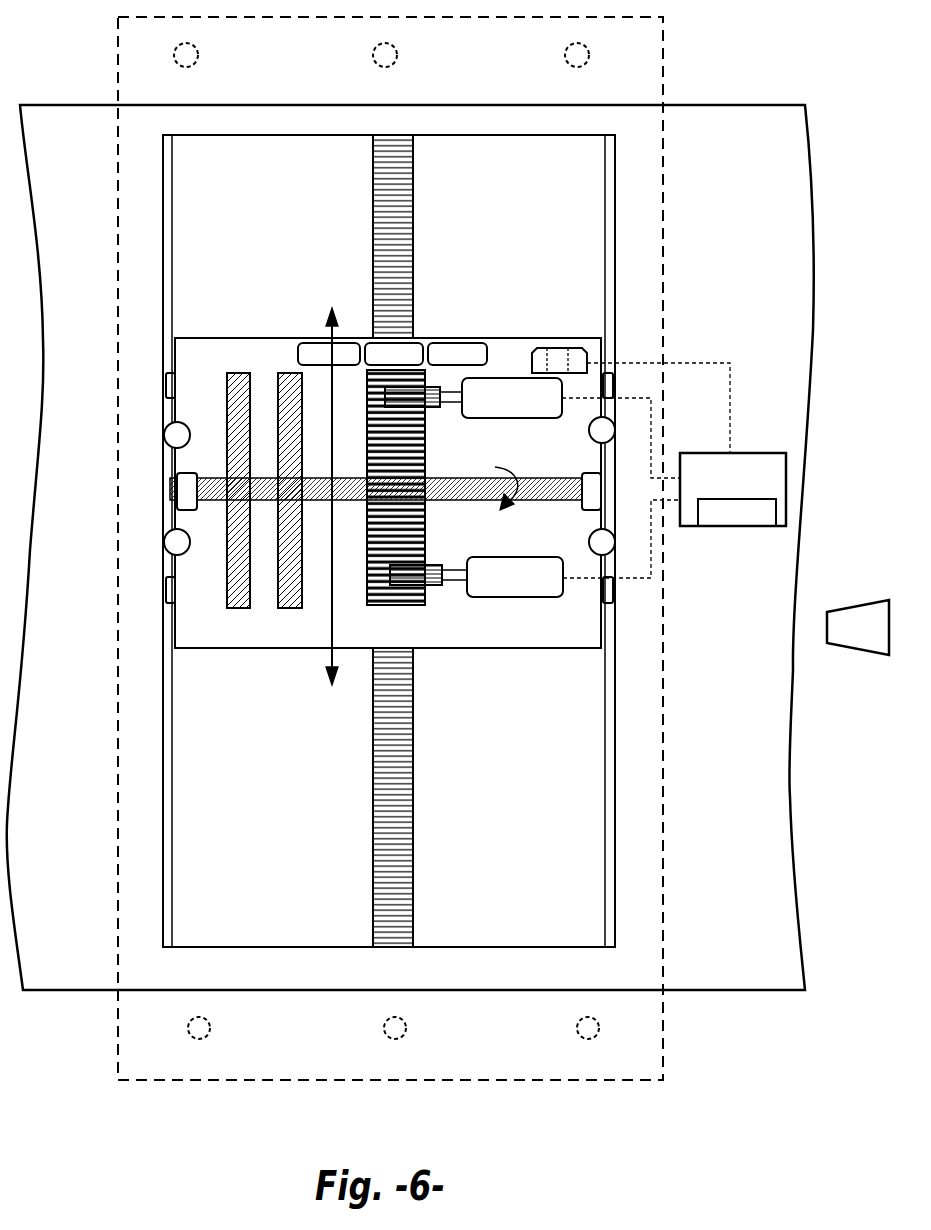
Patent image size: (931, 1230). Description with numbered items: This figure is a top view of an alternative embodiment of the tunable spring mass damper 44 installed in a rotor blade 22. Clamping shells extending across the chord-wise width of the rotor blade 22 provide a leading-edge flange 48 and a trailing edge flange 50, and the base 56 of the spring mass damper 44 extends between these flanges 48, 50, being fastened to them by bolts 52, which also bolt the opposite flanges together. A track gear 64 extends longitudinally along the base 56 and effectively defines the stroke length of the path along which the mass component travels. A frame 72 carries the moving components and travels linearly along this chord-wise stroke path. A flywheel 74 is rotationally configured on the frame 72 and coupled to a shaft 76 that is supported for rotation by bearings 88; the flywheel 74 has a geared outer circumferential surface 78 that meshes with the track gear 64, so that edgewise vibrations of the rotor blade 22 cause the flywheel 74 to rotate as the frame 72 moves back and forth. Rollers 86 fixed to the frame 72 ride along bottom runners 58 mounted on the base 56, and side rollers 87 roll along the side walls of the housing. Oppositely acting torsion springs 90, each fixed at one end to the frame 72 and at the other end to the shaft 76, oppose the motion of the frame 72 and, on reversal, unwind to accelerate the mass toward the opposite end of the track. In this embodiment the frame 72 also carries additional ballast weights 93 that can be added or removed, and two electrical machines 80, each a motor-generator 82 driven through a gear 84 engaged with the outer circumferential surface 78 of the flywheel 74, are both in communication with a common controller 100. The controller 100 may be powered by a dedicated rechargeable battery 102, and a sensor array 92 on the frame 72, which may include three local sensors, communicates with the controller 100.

The rotor blade 22 is at (55, 184).
The spring mass damper 44 is at (702, 264).
The leading-edge flange 48 is at (462, 74).
The trailing edge flange 50 is at (279, 1057).
The bolts 52 is at (198, 57).
The base 56 is at (242, 221).
The bottom runners 58 is at (172, 752).
The track gear 64 is at (413, 207).
The frame 72 is at (189, 636).
The flywheel 74 is at (425, 526).
The shaft 76 is at (553, 490).
The geared outer circumferential surface 78 is at (392, 598).
The electrical machine 80 is at (477, 536).
The motor-generator 82 is at (492, 405).
The gear 84 is at (424, 397).
The rollers 86 is at (166, 385).
The side rollers 87 is at (168, 547).
The bearings 88 is at (190, 490).
The torsion springs 90 is at (240, 373).
The sensor array 92 is at (562, 348).
The ballast weights 93 is at (466, 350).
The controller 100 is at (753, 453).
The rechargeable battery 102 is at (729, 522).